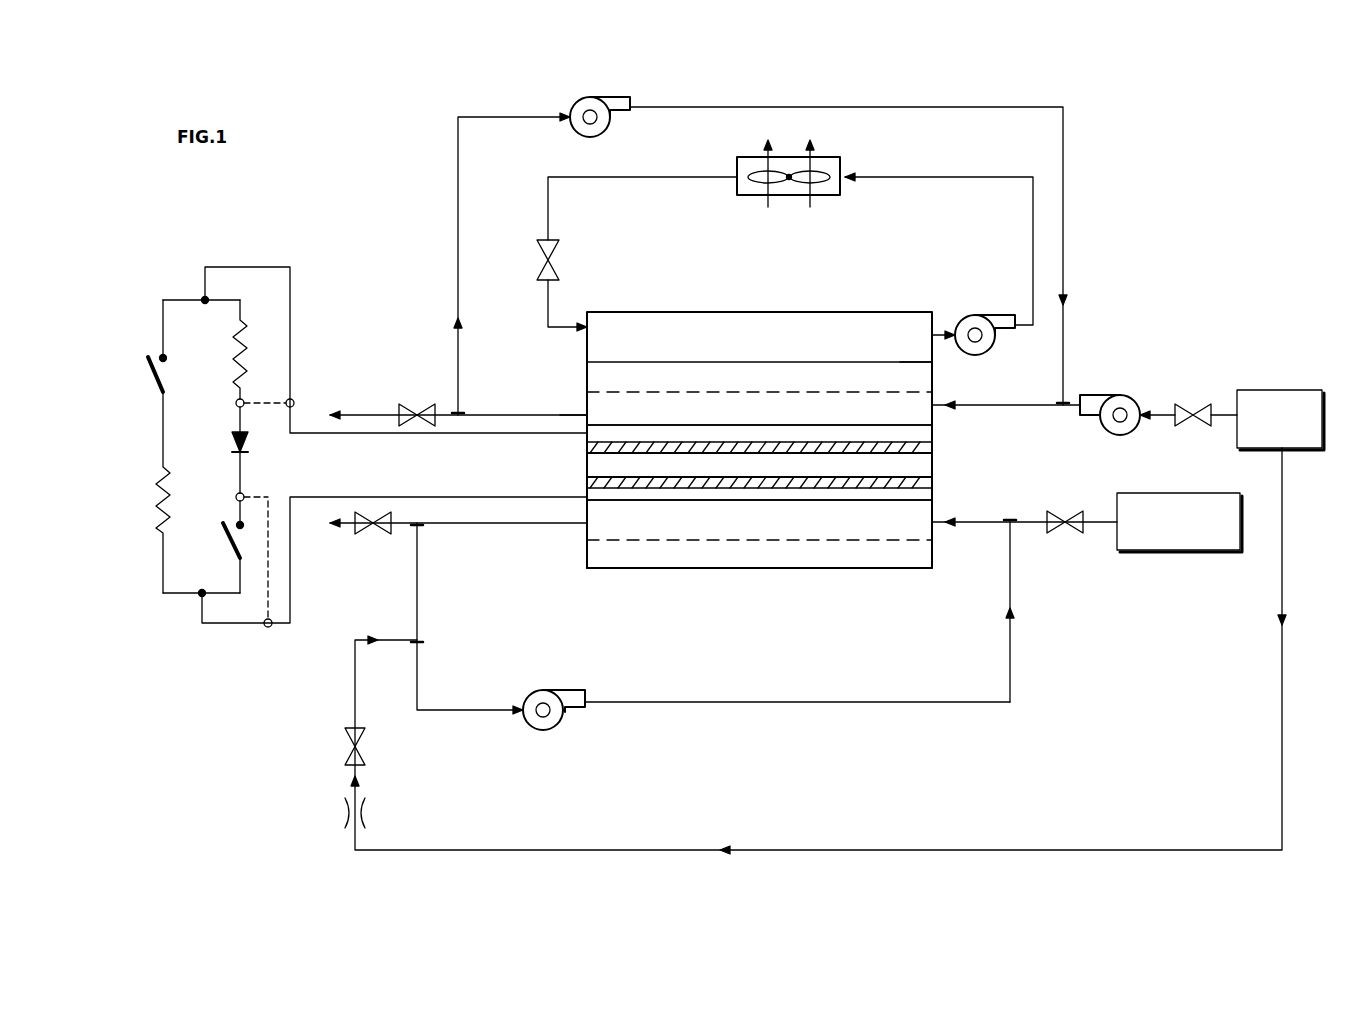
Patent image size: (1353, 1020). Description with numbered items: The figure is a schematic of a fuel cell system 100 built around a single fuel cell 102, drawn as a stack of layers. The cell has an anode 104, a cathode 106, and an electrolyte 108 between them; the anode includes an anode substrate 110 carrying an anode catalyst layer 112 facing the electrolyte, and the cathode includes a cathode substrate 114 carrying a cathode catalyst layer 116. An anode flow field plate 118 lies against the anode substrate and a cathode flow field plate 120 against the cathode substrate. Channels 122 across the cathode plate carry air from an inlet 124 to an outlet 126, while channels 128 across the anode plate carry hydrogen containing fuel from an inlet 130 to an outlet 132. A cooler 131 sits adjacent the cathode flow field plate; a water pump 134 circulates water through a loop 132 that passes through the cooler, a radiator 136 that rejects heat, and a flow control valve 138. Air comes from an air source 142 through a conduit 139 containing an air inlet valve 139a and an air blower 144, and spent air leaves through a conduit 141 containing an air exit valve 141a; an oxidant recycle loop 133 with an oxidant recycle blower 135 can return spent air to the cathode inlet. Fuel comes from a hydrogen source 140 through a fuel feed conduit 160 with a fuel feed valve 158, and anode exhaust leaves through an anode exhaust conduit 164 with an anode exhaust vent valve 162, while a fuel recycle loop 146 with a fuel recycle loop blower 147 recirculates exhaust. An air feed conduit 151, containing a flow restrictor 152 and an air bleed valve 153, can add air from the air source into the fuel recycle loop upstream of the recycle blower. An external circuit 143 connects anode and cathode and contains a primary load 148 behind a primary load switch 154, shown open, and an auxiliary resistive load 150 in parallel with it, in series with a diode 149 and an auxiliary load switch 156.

The fuel cell system 100 is at (1163, 193).
The fuel cell 102 is at (676, 310).
The anode 104 is at (936, 477).
The cathode 106 is at (936, 425).
The electrolyte 108 is at (935, 466).
The anode substrate 110 is at (710, 505).
The anode catalyst layer 112 is at (585, 484).
The cathode substrate 114 is at (695, 432).
The cathode catalyst layer 116 is at (585, 450).
The anode flow field plate 118 is at (785, 570).
The cathode flow field plate 120 is at (926, 381).
The channels 122 is at (585, 390).
The cathode flow field inlet 124 is at (935, 403).
The cathode flow field outlet 126 is at (585, 414).
The channels 128 is at (586, 545).
The anode flow field inlet 130 is at (935, 528).
The cooler 131 is at (787, 318).
The anode flow field outlet / coolant loop 132 is at (925, 177).
The oxidant recycle loop 133 is at (925, 107).
The water pump 134 is at (985, 318).
The oxidant recycle blower 135 is at (600, 99).
The radiator 136 is at (836, 160).
The flow control valve 138 is at (556, 261).
The conduit 139 is at (1160, 418).
The air inlet valve 139a is at (1195, 410).
The source of hydrogen containing fuel 140 is at (1182, 494).
The conduit 141 is at (465, 413).
The air exit valve 141a is at (415, 410).
The source of air 142 is at (1283, 391).
The external circuit 143 is at (293, 292).
The air blower 144 is at (1110, 405).
The fuel recycle loop 146 is at (732, 700).
The fuel recycle loop blower 147 is at (553, 695).
The primary load 148 is at (156, 496).
The diode 149 is at (232, 441).
The auxiliary resistive load 150 is at (247, 363).
The air feed conduit 151 is at (850, 850).
The flow restrictor 152 is at (366, 818).
The air bleed valve 153 is at (362, 749).
The primary load switch 154 is at (188, 367).
The auxiliary load switch 156 is at (230, 531).
The fuel feed valve 158 is at (1062, 518).
The fuel feed conduit 160 is at (1032, 526).
The anode exhaust vent valve 162 is at (368, 538).
The anode exhaust conduit 164 is at (440, 528).